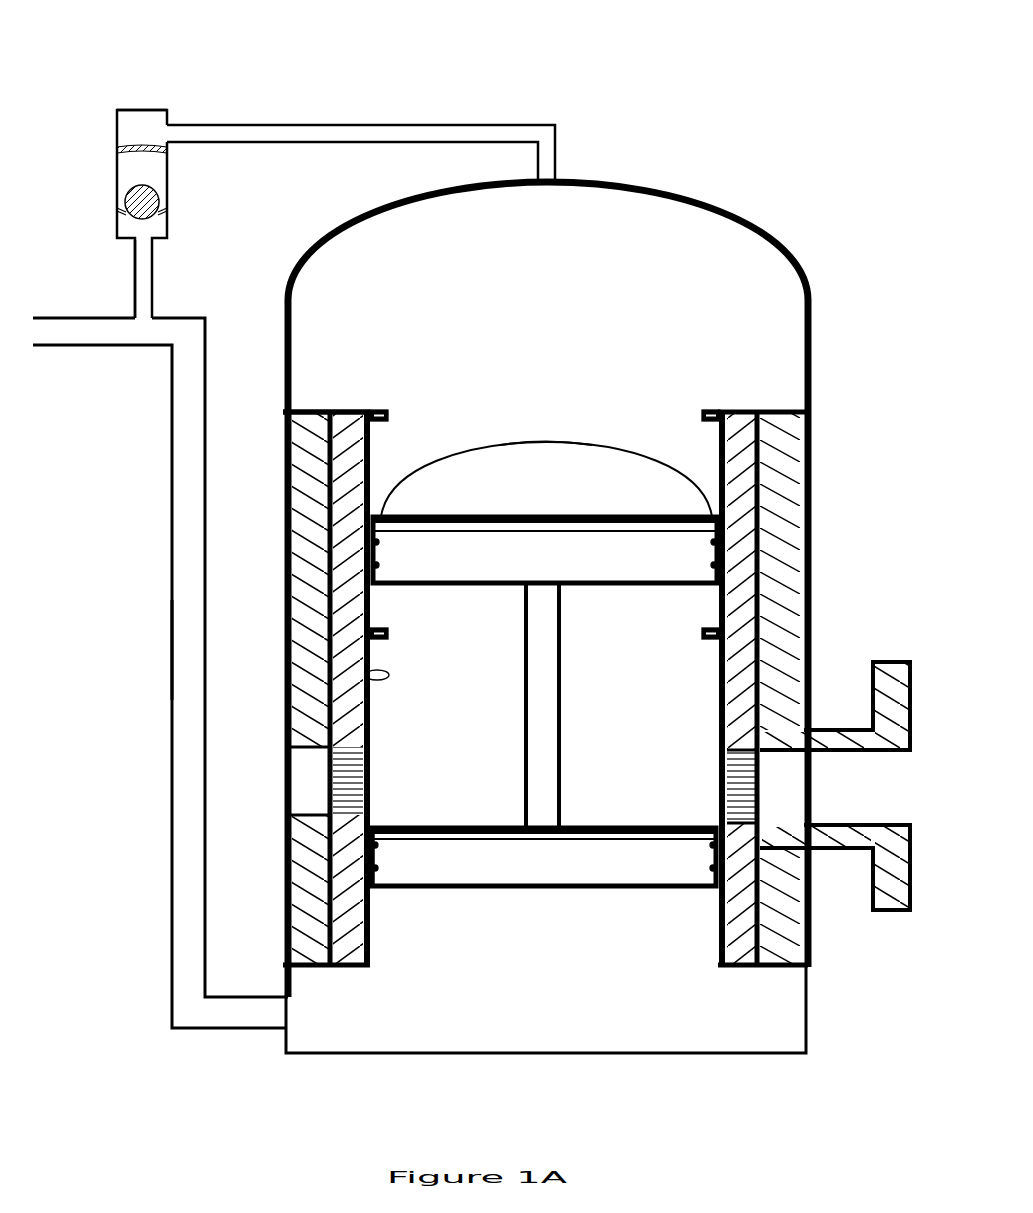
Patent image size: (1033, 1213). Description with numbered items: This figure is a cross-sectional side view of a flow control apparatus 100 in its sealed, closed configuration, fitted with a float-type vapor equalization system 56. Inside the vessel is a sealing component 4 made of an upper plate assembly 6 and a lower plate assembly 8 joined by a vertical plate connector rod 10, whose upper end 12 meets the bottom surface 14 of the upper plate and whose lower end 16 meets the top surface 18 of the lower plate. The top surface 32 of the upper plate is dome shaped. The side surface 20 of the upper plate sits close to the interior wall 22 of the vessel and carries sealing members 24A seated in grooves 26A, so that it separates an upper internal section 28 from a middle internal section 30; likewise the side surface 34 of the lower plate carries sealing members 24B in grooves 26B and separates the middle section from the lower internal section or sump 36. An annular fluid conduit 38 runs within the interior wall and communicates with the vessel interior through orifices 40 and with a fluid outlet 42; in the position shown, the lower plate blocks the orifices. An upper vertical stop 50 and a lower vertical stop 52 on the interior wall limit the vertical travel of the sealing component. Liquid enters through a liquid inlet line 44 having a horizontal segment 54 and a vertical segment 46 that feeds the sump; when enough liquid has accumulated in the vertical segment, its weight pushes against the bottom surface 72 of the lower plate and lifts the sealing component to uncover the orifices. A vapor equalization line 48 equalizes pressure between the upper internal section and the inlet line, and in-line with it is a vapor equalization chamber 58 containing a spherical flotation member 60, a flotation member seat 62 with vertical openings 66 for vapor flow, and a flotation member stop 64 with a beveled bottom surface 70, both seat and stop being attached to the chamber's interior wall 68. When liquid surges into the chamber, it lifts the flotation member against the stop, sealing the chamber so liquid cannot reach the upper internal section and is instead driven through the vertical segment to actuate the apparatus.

The flow control apparatus 100 is at (695, 149).
The sealing component 4 is at (609, 430).
The upper plate assembly 6 is at (487, 478).
The lower plate assembly 8 is at (466, 888).
The plate connector rod 10 is at (526, 690).
The upper end 12 is at (562, 595).
The bottom surface 14 is at (465, 584).
The lower end 16 is at (562, 820).
The top surface 18 is at (455, 827).
The side surface 20 is at (372, 548).
The interior wall 22 is at (330, 700).
The sealing members 24A is at (372, 541).
The sealing members 24B is at (372, 847).
The grooves 26A is at (372, 566).
The grooves 26B is at (372, 870).
The upper internal section 28 is at (525, 326).
The middle internal section 30 is at (594, 696).
The top surface 32 is at (550, 442).
The side surface 34 is at (372, 858).
The lower internal section (sump) 36 is at (541, 996).
The fluid conduit 38 is at (300, 760).
The orifices 40 is at (340, 793).
The fluid outlet 42 is at (830, 730).
The liquid inlet line 44 is at (70, 317).
The vertical segment 46 is at (170, 657).
The vapor equalization line 48 is at (352, 125).
The upper vertical stop 50 is at (372, 416).
The lower vertical stop 52 is at (366, 676).
The horizontal segment 54 is at (90, 347).
The vapor equalization system 56 is at (103, 126).
The vapor equalization chamber 58 is at (158, 114).
The flotation member 60 is at (126, 199).
The flotation member seat 62 is at (122, 212).
The flotation member stop 64 is at (133, 150).
The openings 66 is at (122, 214).
The interior wall 68 is at (122, 177).
The beveled bottom surface 70 is at (128, 160).
The bottom surface 72 is at (582, 888).